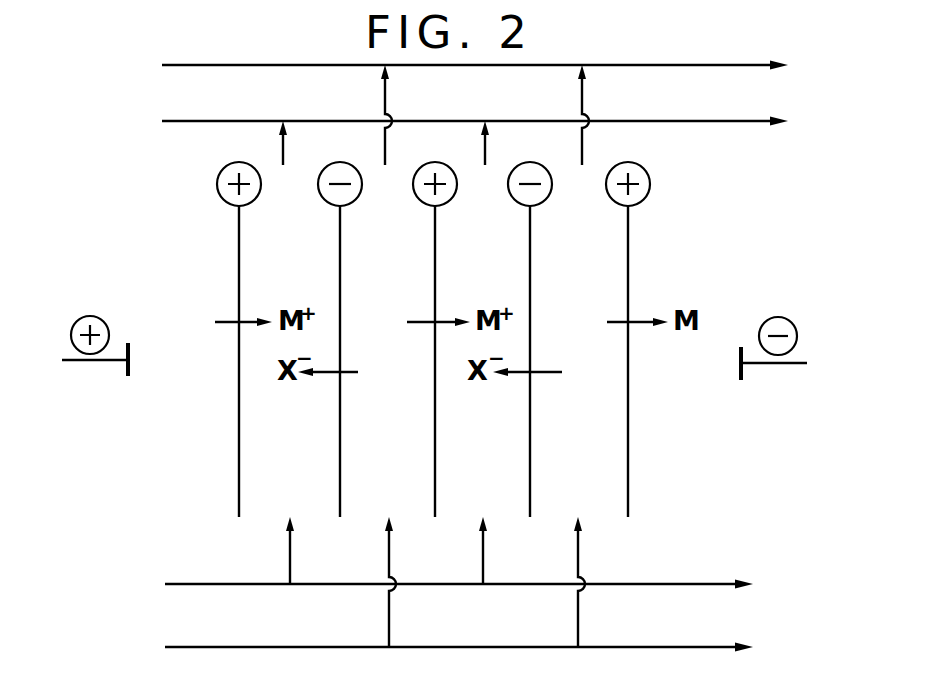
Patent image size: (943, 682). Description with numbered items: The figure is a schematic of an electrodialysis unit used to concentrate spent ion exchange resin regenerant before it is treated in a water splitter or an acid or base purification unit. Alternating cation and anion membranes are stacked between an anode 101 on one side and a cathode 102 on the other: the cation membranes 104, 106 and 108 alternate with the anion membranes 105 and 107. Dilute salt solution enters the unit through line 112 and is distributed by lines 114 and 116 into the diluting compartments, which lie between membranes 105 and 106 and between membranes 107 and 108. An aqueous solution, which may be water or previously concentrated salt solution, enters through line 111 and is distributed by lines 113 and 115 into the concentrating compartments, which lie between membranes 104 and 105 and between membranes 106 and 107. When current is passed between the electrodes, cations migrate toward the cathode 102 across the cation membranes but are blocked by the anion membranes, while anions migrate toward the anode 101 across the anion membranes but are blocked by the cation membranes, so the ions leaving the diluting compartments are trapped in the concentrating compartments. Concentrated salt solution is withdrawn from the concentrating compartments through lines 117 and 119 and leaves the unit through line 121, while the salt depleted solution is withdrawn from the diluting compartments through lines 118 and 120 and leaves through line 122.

The anode 101 is at (125, 372).
The cathode 102 is at (745, 368).
The cation membrane 104 is at (237, 229).
The anion membrane 105 is at (338, 232).
The cation membrane 106 is at (433, 225).
The anion membrane 107 is at (528, 238).
The cation membrane 108 is at (630, 235).
The aqueous solution feed line 111 is at (207, 584).
The dilute salt solution feed line 112 is at (220, 647).
The concentrating compartment feed line 113 is at (292, 560).
The diluting compartment feed line 114 is at (391, 620).
The concentrating compartment feed line 115 is at (485, 560).
The diluting compartment feed line 116 is at (580, 617).
The concentrated salt withdrawal line 117 is at (278, 148).
The salt depleted solution withdrawal line 118 is at (381, 88).
The concentrated salt withdrawal line 119 is at (480, 150).
The salt depleted solution withdrawal line 120 is at (578, 90).
The concentrated salt outlet line 121 is at (729, 121).
The salt depleted solution outlet line 122 is at (677, 65).